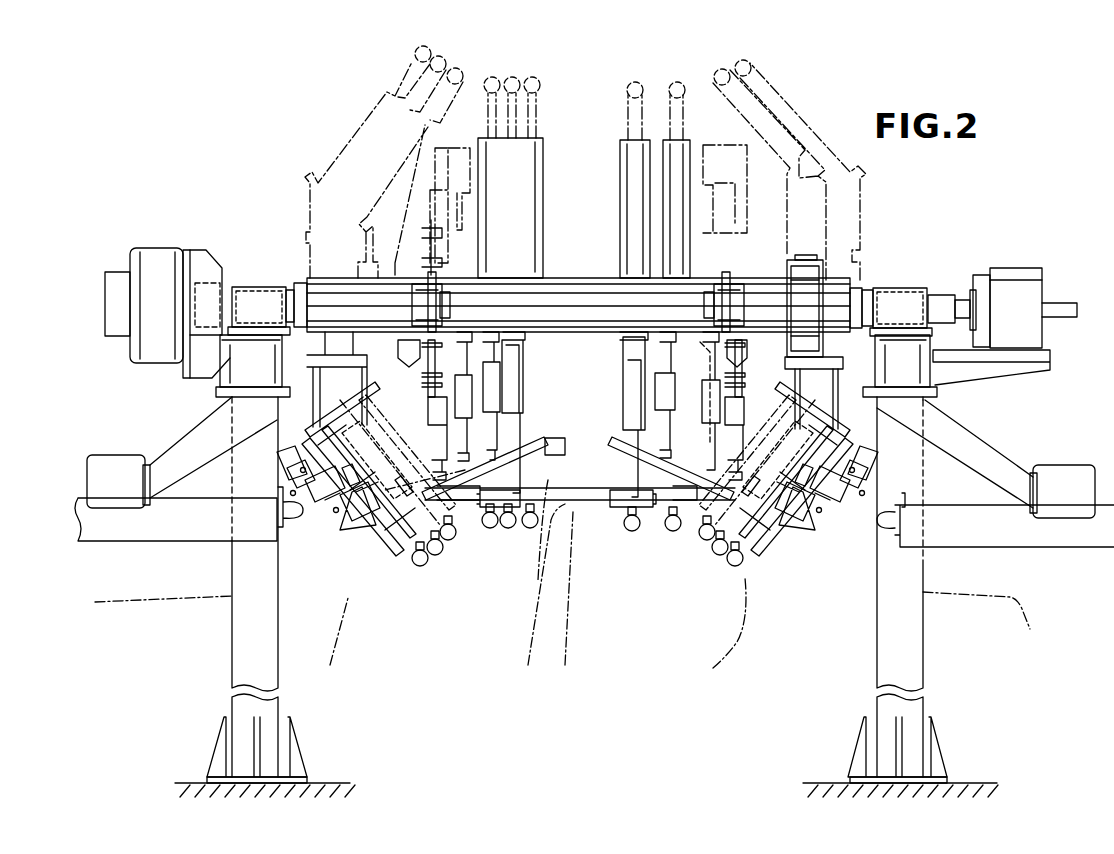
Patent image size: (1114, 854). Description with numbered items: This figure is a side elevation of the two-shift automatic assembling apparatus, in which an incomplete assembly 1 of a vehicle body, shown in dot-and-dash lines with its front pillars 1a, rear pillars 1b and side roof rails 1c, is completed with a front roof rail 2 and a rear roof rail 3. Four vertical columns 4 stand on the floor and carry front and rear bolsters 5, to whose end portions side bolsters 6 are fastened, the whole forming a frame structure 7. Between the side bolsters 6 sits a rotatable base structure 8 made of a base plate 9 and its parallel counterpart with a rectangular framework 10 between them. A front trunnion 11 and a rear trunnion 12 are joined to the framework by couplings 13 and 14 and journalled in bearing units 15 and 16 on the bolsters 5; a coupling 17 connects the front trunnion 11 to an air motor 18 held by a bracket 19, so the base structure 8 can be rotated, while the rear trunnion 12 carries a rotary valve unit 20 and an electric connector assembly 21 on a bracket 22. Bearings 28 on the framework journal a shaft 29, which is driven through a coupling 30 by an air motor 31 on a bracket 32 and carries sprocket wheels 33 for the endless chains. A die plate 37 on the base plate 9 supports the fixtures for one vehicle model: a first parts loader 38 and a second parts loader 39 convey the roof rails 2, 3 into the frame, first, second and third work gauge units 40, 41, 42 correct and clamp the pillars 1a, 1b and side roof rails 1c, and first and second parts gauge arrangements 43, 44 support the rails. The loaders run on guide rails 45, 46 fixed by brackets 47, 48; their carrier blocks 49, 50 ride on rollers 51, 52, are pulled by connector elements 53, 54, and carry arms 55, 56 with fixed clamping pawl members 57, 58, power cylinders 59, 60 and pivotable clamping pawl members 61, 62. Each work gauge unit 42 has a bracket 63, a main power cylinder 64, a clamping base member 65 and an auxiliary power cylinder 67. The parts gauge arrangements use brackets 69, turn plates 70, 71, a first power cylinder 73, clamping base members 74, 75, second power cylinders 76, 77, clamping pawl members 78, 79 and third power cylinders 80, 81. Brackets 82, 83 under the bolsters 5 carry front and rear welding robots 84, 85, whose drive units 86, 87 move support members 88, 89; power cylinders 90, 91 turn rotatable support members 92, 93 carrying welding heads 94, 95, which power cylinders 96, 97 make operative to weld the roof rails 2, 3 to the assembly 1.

The incomplete assembly 1 is at (570, 608).
The front pillars 1a is at (335, 622).
The rear pillars 1b is at (734, 623).
The side roof rails 1c is at (562, 584).
The front roof rail 2 is at (398, 440).
The rear roof rail 3 is at (766, 462).
The vertical column 4 is at (278, 564).
The front and rear bolsters 5 is at (926, 374).
The side bolsters 6 is at (272, 287).
The frame structure 7 is at (926, 650).
The rotatable base structure 8 is at (571, 278).
The base plate 9 is at (596, 278).
The rectangular framework 10 is at (635, 278).
The front trunnion 11 is at (274, 312).
The rear trunnion 12 is at (881, 312).
The coupling 13 is at (296, 283).
The coupling 14 is at (860, 288).
The bearing unit 15 is at (240, 282).
The bearing unit 16 is at (916, 286).
The coupling 17 is at (222, 258).
The air motor 18 is at (174, 248).
The bracket 19 is at (180, 374).
The rotary valve unit 20 is at (946, 296).
The rotary-type electric connector assembly 21 is at (1030, 268).
The bracket 22 is at (1020, 374).
The bearings 28 is at (406, 308).
The rotatable shaft 29 is at (700, 278).
The coupling 30 is at (786, 276).
The air motor 31 is at (832, 260).
The bracket 32 is at (808, 260).
The sprocket wheels 33 is at (438, 282).
The die plate 37 is at (558, 278).
The first parts loader 38 is at (352, 370).
The second parts loader 39 is at (746, 439).
The first work gauge units 40 is at (432, 566).
The second work gauge units 41 is at (734, 571).
The third work gauge units 42 is at (505, 534).
The first parts gauge arrangement 43 is at (530, 450).
The second parts gauge arrangement 44 is at (656, 430).
The guide rail 45 is at (422, 378).
The guide rail 46 is at (638, 278).
The brackets 47 is at (398, 344).
The brackets 48 is at (788, 394).
The carrier block 49 is at (520, 278).
The carrier block 50 is at (746, 346).
The rollers 51 is at (424, 360).
The rollers 52 is at (742, 366).
The connector element 53 is at (494, 278).
The connector element 54 is at (672, 278).
The carrier arm 55 is at (432, 430).
The carrier arm 56 is at (742, 414).
The fixed clamping pawl members 57 is at (534, 278).
The fixed clamping pawl members 58 is at (826, 398).
The power cylinder 59 is at (464, 396).
The power cylinder 60 is at (678, 395).
The pivotable clamping pawl member 61 is at (468, 522).
The pivotable clamping pawl member 62 is at (872, 462).
The bracket 63 is at (516, 385).
The main power cylinder 64 is at (524, 374).
The clamping base member 65 is at (602, 494).
The auxiliary power cylinder 67 is at (638, 530).
The brackets 69 is at (662, 278).
The turn plate 70 is at (544, 470).
The turn plate 71 is at (662, 516).
The first power cylinder 73 is at (668, 410).
The clamping base member 74 is at (490, 550).
The clamping base member 75 is at (686, 520).
The second power cylinder 76 is at (540, 512).
The second power cylinder 77 is at (600, 508).
The clamping pawl member 78 is at (460, 538).
The clamping pawl member 79 is at (718, 510).
The third power cylinder 80 is at (542, 556).
The third power cylinder 81 is at (600, 462).
The bracket 82 is at (180, 448).
The bracket 83 is at (1007, 452).
The front welding robot 84 is at (298, 540).
The rear welding robot 85 is at (858, 554).
The drive unit 86 is at (150, 540).
The drive unit 87 is at (1020, 552).
The movable support member 88 is at (318, 526).
The movable support member 89 is at (852, 540).
The power cylinder 90 is at (282, 466).
The power cylinder 91 is at (894, 464).
The rotatable support member 92 is at (344, 556).
The rotatable support member 93 is at (818, 545).
The welding head 94 is at (334, 554).
The welding head 95 is at (810, 532).
The power cylinder 96 is at (332, 450).
The power cylinder 97 is at (852, 434).